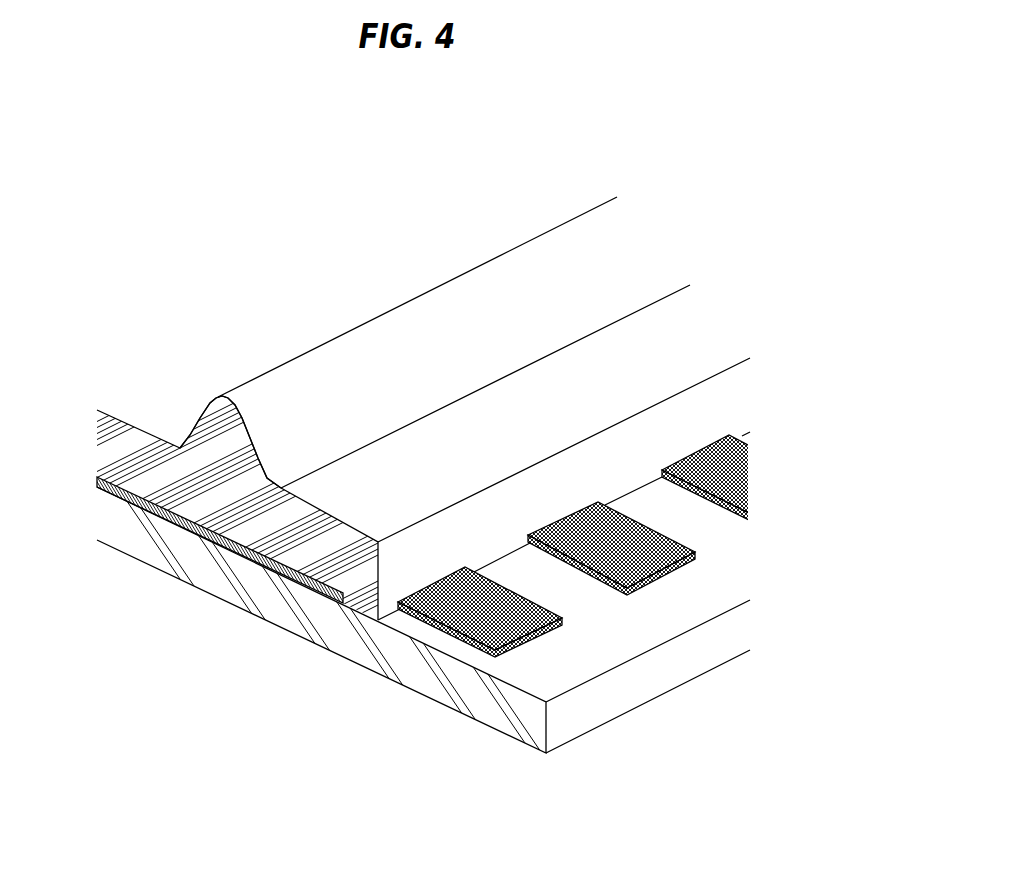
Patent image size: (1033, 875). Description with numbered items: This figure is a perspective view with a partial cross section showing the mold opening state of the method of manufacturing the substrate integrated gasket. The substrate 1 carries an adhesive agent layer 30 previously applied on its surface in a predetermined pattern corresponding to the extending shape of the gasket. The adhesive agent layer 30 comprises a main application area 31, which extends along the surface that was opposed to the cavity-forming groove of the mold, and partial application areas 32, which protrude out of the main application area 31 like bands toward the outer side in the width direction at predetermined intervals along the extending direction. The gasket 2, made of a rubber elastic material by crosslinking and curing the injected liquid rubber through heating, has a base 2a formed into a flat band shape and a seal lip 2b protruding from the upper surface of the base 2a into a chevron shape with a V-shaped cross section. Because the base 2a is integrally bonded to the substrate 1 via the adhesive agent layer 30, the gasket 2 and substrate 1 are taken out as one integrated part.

The substrate 1 is at (297, 635).
The gasket 2 is at (420, 473).
The base 2a is at (330, 516).
The seal lip 2b is at (218, 394).
The adhesive agent layer 30 is at (448, 546).
The main application area 31 is at (198, 508).
The partial application areas 32 is at (548, 601).